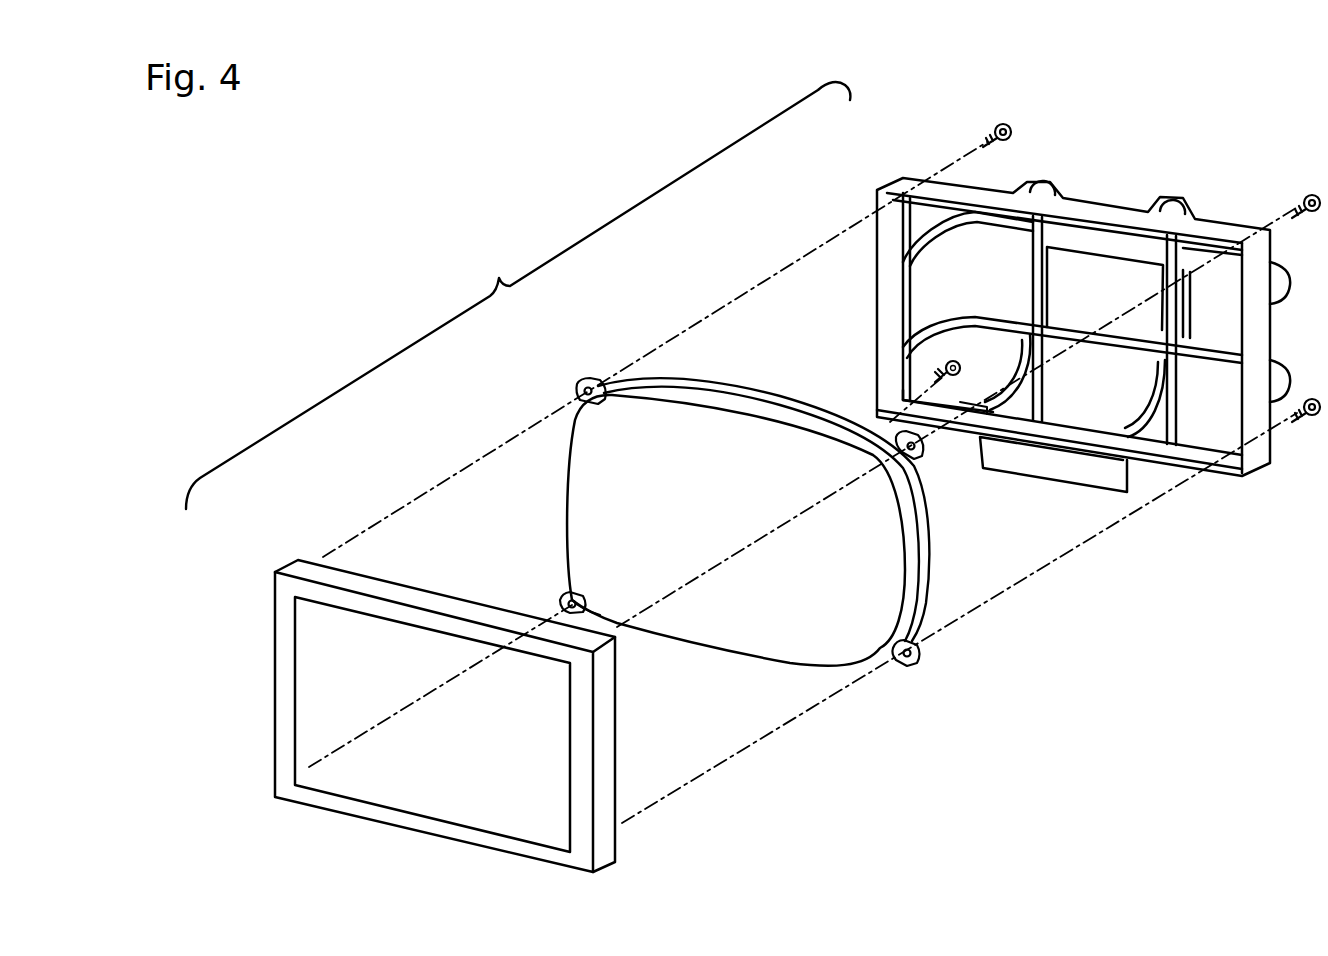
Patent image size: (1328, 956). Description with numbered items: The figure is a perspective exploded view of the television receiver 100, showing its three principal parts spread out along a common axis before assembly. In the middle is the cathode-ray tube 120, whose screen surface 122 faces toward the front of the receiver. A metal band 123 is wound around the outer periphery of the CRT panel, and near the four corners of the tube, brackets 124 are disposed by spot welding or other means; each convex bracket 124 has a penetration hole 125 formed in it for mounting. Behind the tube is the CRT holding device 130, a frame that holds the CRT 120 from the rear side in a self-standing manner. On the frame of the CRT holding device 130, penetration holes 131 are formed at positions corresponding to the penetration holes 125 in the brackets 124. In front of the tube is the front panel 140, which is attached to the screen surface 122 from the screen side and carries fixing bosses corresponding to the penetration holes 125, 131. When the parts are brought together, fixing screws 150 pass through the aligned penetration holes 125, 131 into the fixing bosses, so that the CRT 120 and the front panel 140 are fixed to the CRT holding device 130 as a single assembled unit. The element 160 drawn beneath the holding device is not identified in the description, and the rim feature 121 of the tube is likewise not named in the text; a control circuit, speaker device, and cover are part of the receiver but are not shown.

The television receiver 100 is at (518, 295).
The cathode-ray tube 120 is at (761, 268).
The lens outer rim 121 is at (707, 380).
The screen surface 122 is at (655, 413).
The metal band 123 is at (778, 410).
The bracket 124 is at (584, 380).
The penetration hole 125 is at (557, 600).
The CRT holding device 130 is at (898, 180).
The penetration hole 131 is at (906, 396).
The front panel 140 is at (290, 561).
The fixing screw 150 is at (953, 358).
The support block 160 is at (1143, 477).